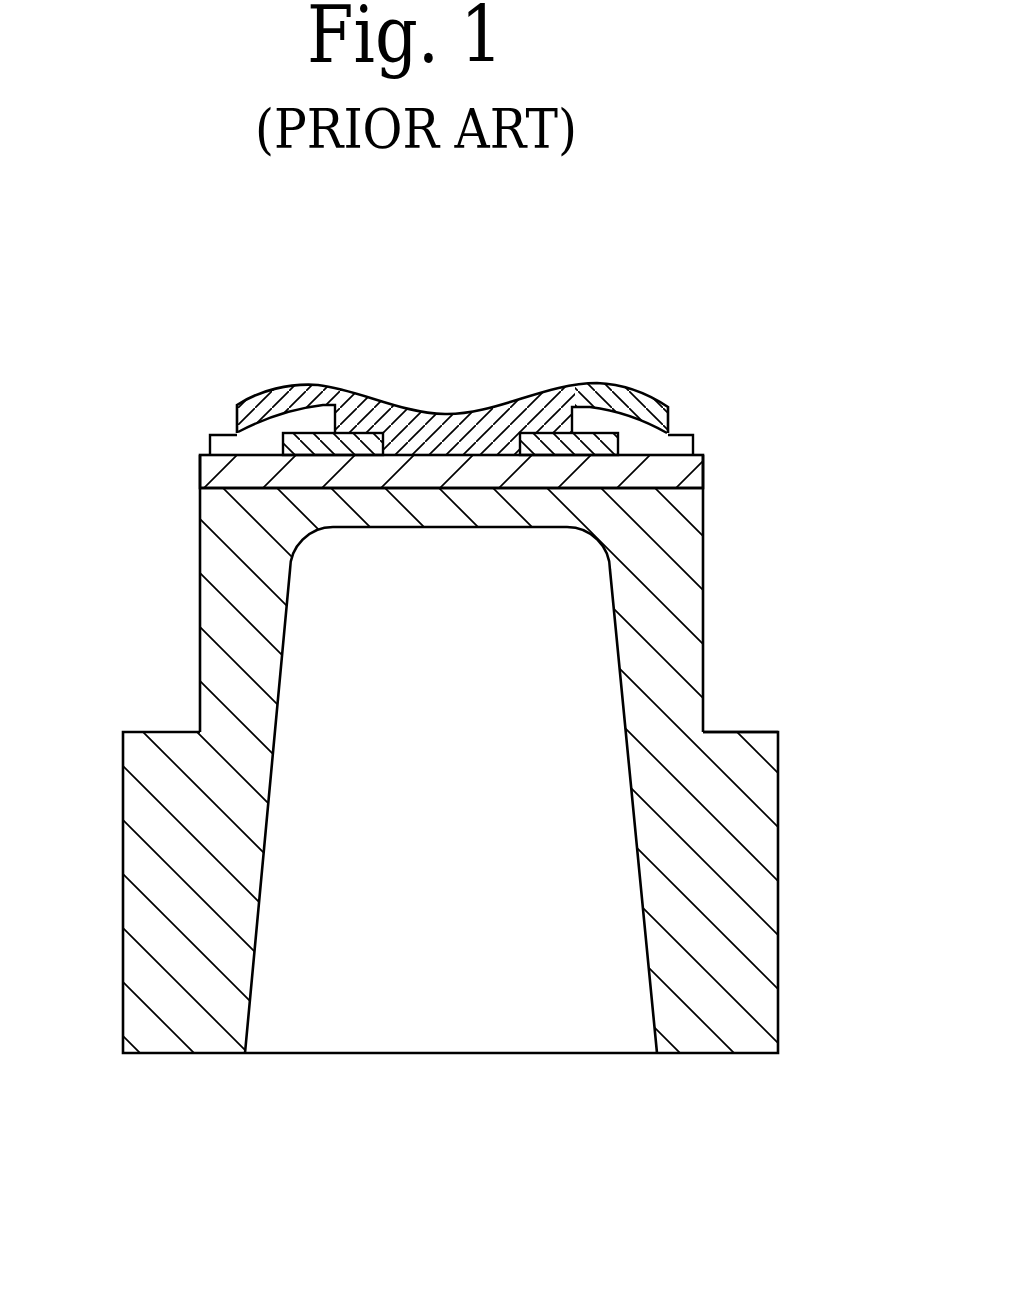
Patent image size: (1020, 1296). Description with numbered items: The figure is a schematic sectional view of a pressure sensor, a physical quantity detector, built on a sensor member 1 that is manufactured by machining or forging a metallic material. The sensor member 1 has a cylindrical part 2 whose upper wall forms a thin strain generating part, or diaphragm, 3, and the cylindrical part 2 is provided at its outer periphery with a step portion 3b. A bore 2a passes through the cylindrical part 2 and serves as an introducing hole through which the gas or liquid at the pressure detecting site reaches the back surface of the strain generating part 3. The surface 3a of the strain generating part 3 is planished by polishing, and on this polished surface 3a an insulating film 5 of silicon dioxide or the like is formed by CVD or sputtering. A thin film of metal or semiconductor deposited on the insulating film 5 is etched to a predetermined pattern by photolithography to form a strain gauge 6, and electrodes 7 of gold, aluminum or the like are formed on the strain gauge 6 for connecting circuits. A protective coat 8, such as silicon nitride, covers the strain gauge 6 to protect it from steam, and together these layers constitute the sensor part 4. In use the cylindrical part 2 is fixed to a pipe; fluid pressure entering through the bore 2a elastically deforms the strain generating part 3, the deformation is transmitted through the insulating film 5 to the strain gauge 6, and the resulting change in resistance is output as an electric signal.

The sensor member 1 is at (492, 721).
The cylindrical part 2 is at (762, 797).
The bore 2a is at (263, 1015).
The strain generating part (diaphragm) 3 is at (490, 512).
The surface of the strain generating part 3a is at (315, 478).
The step portion 3b is at (745, 730).
The sensor part 4 is at (502, 389).
The insulating film 5 is at (197, 470).
The strain gauge 6 is at (537, 435).
The electrodes 7 is at (694, 440).
The protective coat 8 is at (402, 420).